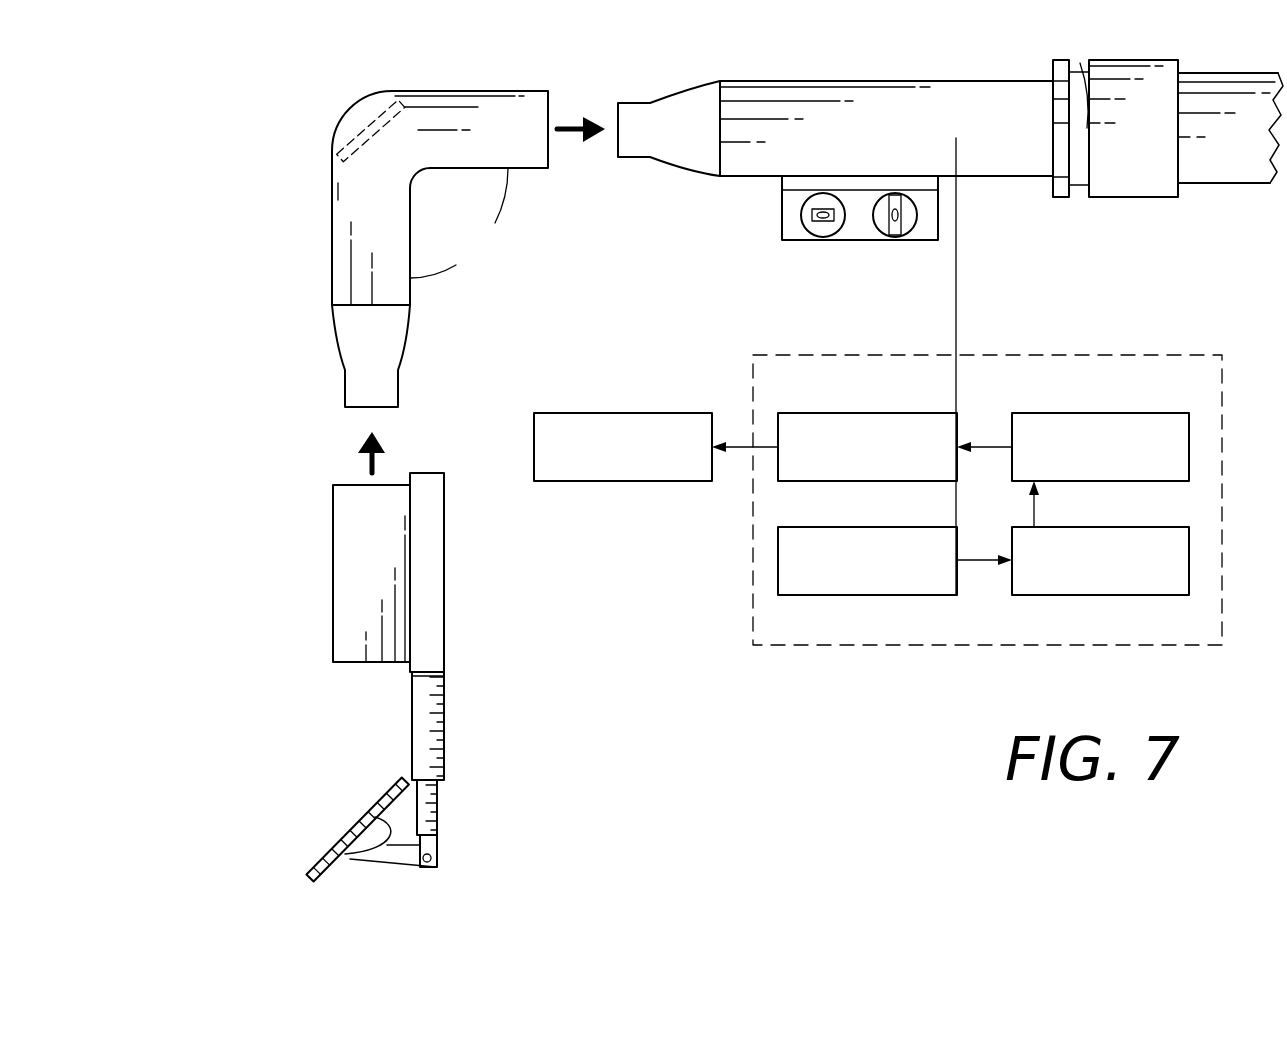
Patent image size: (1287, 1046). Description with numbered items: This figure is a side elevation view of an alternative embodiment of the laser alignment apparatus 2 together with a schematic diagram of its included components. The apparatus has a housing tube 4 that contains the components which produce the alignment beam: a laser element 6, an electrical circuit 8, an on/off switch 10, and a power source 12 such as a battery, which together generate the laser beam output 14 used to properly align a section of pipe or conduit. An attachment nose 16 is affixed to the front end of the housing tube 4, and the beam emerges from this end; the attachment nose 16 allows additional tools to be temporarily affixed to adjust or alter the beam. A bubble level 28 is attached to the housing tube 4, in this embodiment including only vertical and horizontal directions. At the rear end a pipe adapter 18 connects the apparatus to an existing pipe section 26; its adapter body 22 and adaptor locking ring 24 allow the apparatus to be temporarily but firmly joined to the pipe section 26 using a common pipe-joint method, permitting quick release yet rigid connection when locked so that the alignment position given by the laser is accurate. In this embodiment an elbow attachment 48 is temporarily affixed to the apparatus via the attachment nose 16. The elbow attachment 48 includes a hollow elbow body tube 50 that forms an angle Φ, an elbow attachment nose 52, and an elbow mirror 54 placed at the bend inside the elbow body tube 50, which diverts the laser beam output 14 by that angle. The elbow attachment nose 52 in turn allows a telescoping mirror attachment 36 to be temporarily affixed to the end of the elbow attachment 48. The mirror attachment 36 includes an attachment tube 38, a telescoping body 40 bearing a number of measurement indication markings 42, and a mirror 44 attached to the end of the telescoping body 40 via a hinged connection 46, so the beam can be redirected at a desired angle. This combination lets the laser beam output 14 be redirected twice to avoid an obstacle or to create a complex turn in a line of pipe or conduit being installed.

The laser alignment apparatus 2 is at (857, 318).
The housing tube 4 is at (797, 85).
The laser element 6 is at (867, 447).
The electrical circuit 8 is at (1100, 447).
The on/off switch 10 is at (867, 561).
The power source 12 is at (1100, 561).
The laser beam output 14 is at (623, 448).
The attachment nose 16 is at (698, 88).
The pipe adapter 18 is at (1168, 191).
The adapter body 22 is at (1063, 200).
The adaptor locking ring 24 is at (1135, 200).
The pipe section 26 is at (1207, 185).
The bubble level 28 is at (780, 240).
The telescoping mirror attachment 36 is at (426, 677).
The attachment tube 38 is at (333, 572).
The telescoping body 40 is at (445, 551).
The measurement indication markings 42 is at (456, 731).
The mirror 44 is at (358, 826).
The hinged connection 46 is at (432, 850).
The elbow attachment 48 is at (362, 240).
The elbow body tube 50 is at (332, 175).
The elbow attachment nose 52 is at (335, 333).
The elbow mirror 54 is at (352, 113).